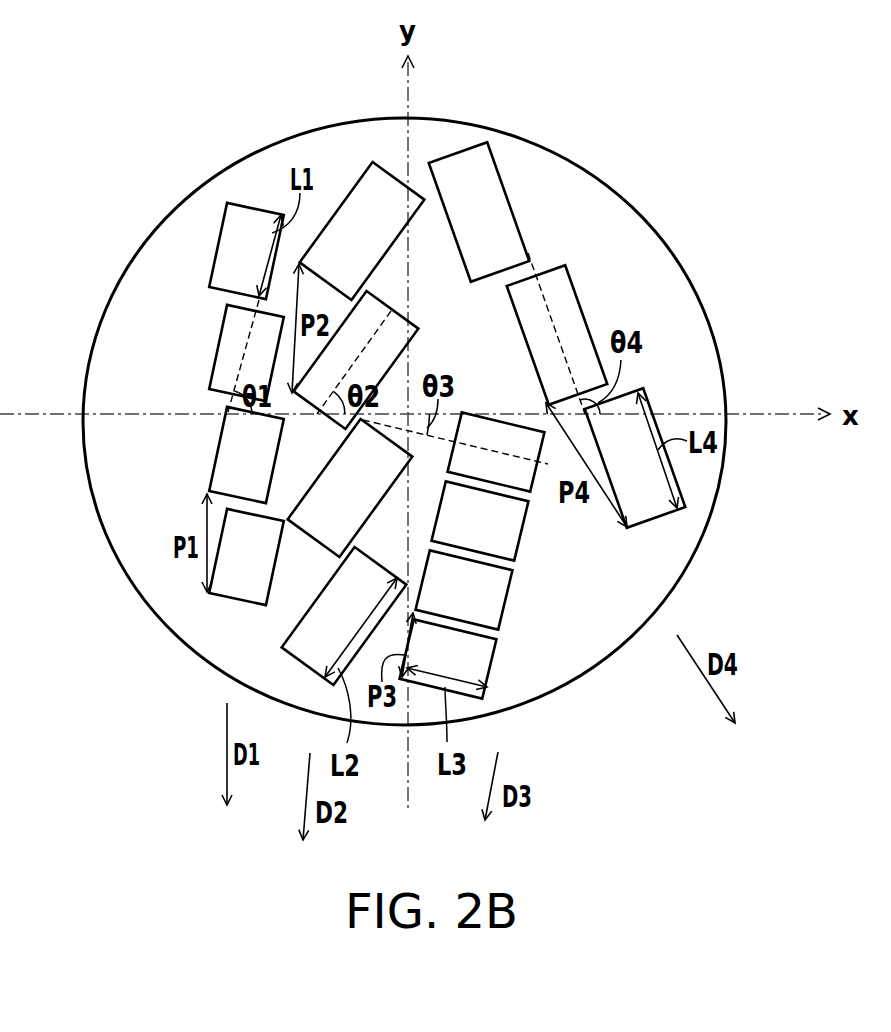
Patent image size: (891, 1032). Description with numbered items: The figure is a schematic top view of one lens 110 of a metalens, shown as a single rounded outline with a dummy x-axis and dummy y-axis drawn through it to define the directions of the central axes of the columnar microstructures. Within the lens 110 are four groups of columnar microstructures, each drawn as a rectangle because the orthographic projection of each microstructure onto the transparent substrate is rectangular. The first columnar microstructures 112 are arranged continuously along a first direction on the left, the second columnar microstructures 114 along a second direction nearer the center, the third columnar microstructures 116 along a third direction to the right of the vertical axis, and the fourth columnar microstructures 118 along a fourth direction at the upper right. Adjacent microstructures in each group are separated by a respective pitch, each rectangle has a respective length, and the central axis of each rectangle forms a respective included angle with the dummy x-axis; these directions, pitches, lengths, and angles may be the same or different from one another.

The lens 110 is at (688, 568).
The first columnar microstructures 112 is at (264, 263).
The second columnar microstructures 114 is at (379, 244).
The third columnar microstructures 116 is at (514, 470).
The fourth columnar microstructures 118 is at (498, 224).